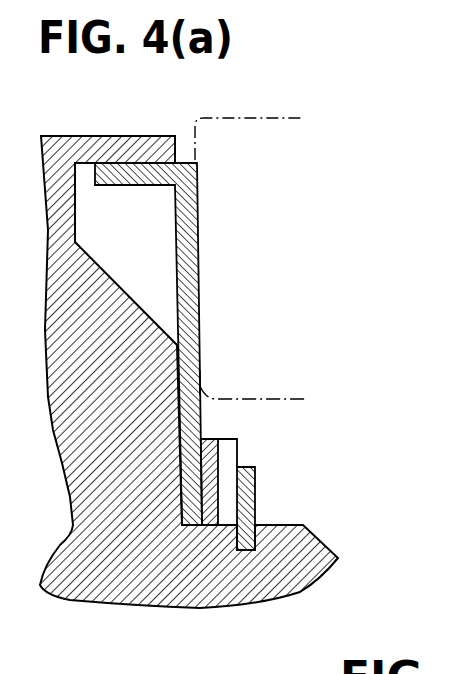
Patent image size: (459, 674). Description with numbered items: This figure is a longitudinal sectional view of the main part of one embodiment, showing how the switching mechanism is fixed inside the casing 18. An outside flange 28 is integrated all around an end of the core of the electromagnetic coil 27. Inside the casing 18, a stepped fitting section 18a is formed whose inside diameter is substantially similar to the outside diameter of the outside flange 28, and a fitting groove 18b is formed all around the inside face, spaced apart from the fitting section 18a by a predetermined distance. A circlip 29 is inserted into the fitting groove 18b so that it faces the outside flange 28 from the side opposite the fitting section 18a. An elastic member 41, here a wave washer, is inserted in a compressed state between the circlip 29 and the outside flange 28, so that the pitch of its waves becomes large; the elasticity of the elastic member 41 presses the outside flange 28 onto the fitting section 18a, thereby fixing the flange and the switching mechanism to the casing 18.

The casing 18 is at (137, 602).
The fitting section 18a is at (198, 380).
The fitting groove 18b is at (250, 547).
The electromagnetic coil 27 is at (242, 118).
The outside flange 28 is at (175, 236).
The circlip 29 is at (257, 500).
The elastic member 41 is at (231, 456).